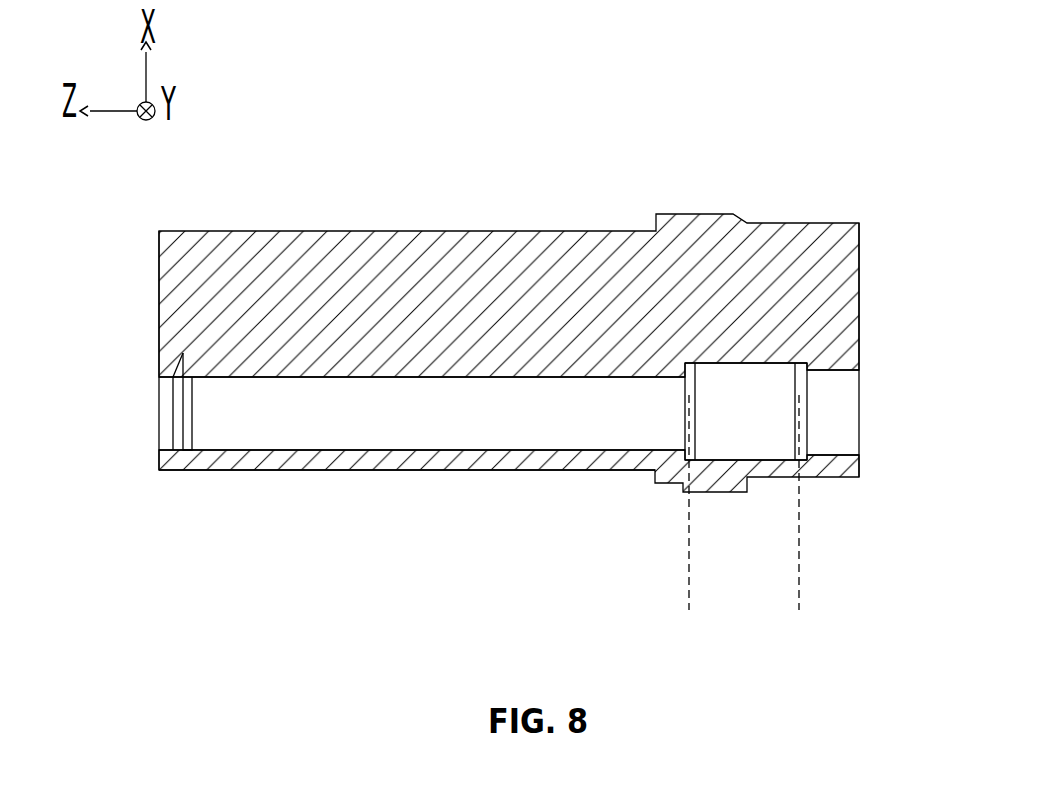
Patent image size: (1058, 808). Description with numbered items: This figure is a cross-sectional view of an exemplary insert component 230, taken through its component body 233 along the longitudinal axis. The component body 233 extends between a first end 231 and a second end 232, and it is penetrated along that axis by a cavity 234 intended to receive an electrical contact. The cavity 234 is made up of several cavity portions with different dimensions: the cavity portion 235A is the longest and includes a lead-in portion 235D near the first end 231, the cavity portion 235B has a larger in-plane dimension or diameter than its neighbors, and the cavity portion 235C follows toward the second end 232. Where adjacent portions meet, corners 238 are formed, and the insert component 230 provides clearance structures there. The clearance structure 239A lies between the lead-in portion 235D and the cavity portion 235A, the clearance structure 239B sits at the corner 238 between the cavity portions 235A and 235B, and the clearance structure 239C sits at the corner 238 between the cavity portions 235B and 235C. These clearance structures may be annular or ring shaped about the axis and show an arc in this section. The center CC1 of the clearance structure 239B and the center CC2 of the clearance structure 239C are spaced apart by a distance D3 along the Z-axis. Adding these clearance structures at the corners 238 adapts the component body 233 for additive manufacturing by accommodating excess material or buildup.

The insert component 230 is at (528, 73).
The first end 231 is at (156, 313).
The second end 232 is at (860, 317).
The component body 233 is at (266, 461).
The cavity 234 is at (256, 428).
The cavity portion 235A is at (380, 430).
The cavity portion 235B is at (746, 429).
The cavity portion 235C is at (840, 420).
The lead-in portion 235D is at (180, 406).
The corners 238 is at (784, 355).
The clearance structure 239A is at (189, 368).
The clearance structure 239B is at (681, 361).
The clearance structure 239C is at (800, 358).
The center of clearance structure CC1 is at (689, 415).
The center of clearance structure CC2 is at (802, 411).
The distance D3 is at (797, 586).